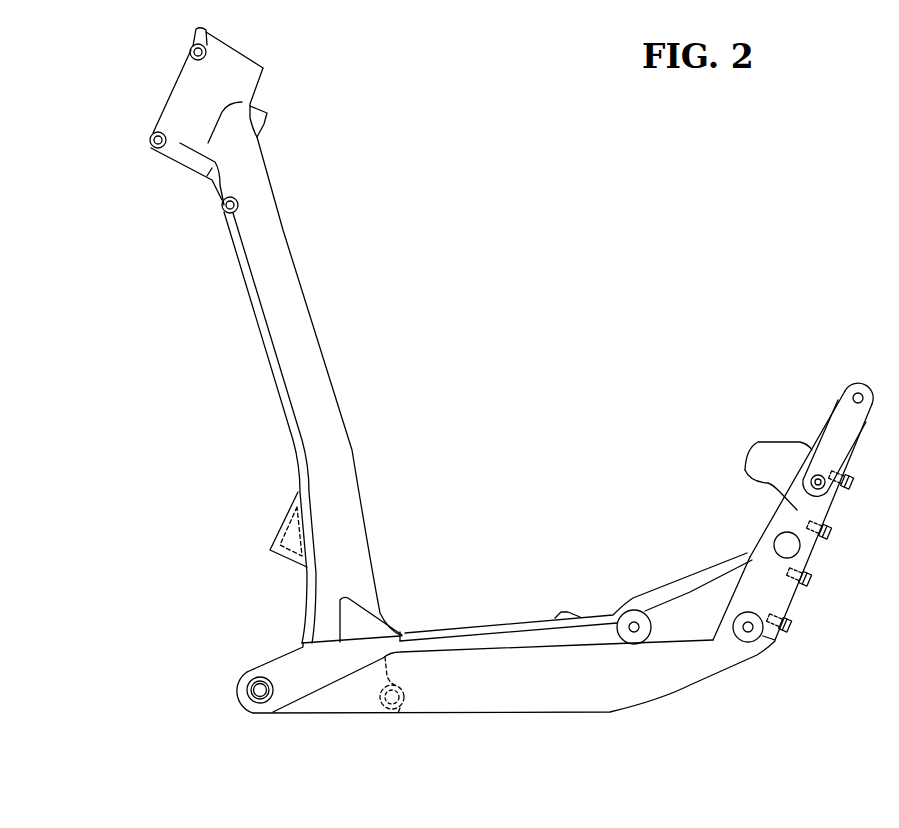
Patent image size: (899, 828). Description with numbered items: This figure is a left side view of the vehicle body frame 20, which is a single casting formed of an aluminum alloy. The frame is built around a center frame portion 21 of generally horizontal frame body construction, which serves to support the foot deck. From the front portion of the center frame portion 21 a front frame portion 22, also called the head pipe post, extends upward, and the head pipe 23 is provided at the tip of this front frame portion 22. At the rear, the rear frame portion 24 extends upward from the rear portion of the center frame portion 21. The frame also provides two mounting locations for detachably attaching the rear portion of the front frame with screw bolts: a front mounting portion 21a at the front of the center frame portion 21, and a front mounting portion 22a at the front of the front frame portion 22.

The vehicle body frame 20 is at (781, 162).
The center frame portion 21 is at (542, 695).
The front mounting portion 21a is at (248, 708).
The front frame portion 22 is at (288, 318).
The front mounting portion 22a is at (270, 550).
The head pipe 23 is at (182, 107).
The rear frame portion 24 is at (747, 465).